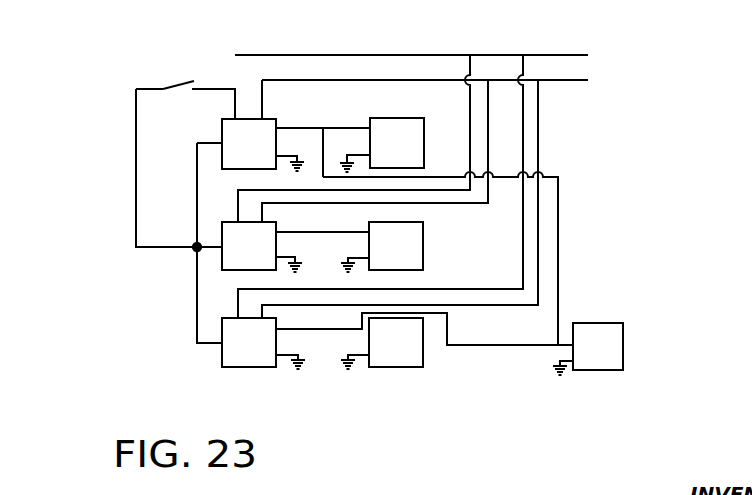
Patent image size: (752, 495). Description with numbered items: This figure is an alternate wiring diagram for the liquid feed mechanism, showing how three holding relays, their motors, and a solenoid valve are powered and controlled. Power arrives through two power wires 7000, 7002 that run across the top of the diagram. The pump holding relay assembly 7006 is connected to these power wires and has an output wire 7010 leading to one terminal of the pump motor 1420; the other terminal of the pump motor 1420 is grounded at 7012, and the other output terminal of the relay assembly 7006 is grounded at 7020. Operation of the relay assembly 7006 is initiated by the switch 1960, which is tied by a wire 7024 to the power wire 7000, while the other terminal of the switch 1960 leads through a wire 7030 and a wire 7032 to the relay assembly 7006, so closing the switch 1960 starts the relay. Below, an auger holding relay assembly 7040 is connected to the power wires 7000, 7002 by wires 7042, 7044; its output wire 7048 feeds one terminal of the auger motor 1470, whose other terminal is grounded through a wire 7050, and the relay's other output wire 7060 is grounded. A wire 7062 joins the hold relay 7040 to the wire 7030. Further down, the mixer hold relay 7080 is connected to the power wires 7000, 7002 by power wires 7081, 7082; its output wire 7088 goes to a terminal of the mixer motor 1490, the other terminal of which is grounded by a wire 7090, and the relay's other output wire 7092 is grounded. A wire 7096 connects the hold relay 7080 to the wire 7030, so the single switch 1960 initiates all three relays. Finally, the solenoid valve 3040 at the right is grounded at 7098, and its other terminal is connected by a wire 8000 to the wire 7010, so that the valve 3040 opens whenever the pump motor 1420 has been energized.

The power wire 7000 is at (552, 53).
The power wire 7002 is at (573, 79).
The wire 7024 is at (205, 87).
The switch 1960 is at (179, 84).
The wire 7030 is at (135, 168).
The wire 7032 is at (197, 199).
The wire 7062 is at (208, 249).
The wire 7096 is at (197, 318).
The pump holding relay assembly 7006 is at (265, 125).
The ground 7020 is at (299, 151).
The output wire 7010 is at (340, 110).
The pump motor 1420 is at (397, 118).
The ground 7012 is at (366, 154).
The wire 7042 is at (427, 192).
The wire 7044 is at (427, 203).
The power wire 7081 is at (467, 292).
The power wire 7082 is at (455, 307).
The wire 8000 is at (560, 223).
The output wire 7060 is at (262, 247).
The auger holding relay assembly 7040 is at (269, 229).
The output wire 7048 is at (303, 234).
The auger motor 1470 is at (425, 251).
The wire 7050 is at (363, 265).
The mixer hold relay 7080 is at (269, 323).
The output wire 7088 is at (358, 326).
The output wire 7092 is at (287, 357).
The mixer motor 1490 is at (423, 357).
The wire 7090 is at (363, 358).
The solenoid valve 3040 is at (583, 322).
The ground 7098 is at (563, 370).